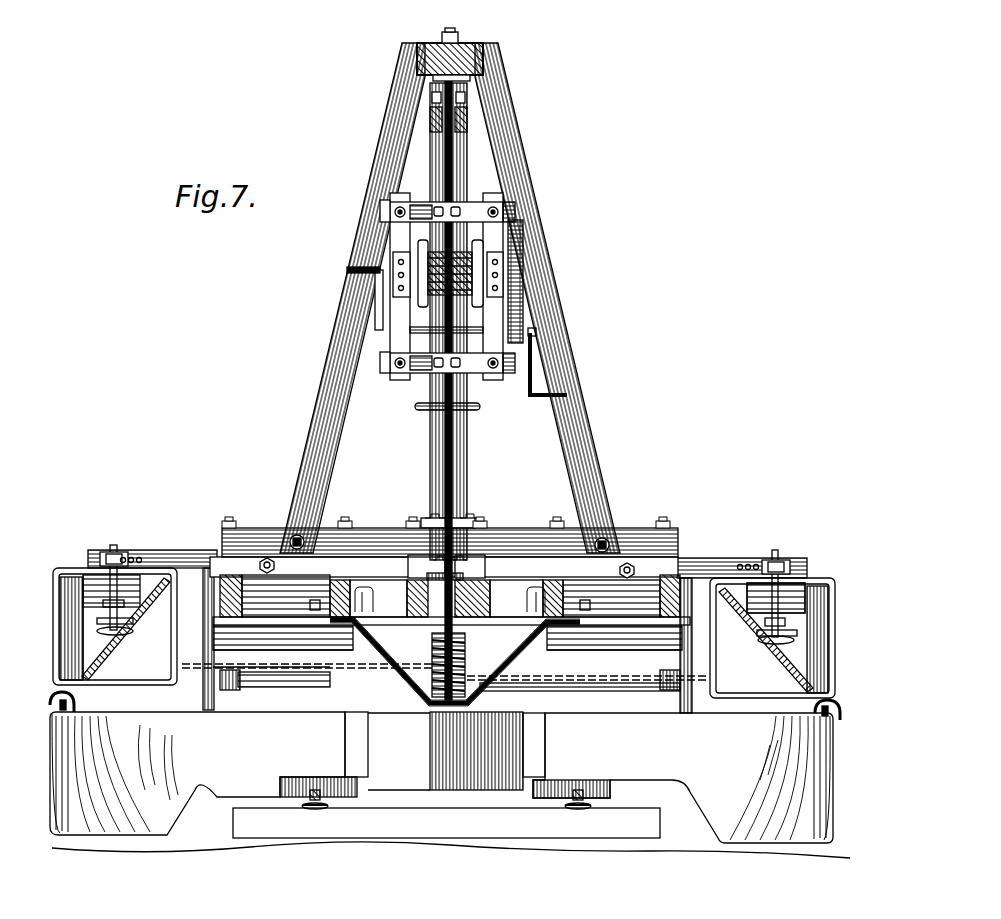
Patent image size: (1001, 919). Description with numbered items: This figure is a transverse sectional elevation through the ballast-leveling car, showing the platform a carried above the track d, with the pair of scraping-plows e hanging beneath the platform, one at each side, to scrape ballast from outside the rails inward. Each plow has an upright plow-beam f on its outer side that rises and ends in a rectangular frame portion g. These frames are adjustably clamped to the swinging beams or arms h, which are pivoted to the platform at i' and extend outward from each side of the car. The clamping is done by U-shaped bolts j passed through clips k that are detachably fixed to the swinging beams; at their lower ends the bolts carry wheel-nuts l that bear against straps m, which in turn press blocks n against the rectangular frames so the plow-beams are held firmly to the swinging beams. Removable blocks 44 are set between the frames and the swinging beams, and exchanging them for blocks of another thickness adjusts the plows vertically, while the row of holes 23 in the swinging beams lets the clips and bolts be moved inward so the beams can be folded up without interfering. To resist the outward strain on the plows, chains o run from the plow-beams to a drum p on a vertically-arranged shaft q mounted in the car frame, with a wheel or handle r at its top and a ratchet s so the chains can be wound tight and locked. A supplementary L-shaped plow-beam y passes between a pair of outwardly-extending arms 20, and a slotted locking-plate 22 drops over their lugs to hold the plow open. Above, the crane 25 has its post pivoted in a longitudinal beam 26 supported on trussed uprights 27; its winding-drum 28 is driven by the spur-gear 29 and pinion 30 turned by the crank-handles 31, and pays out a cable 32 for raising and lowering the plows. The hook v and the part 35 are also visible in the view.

The longitudinal beam 26 is at (472, 50).
The crane 25 is at (467, 117).
The cable 32 is at (452, 155).
The spur-gear 29 is at (522, 265).
The winding-drum 28 is at (522, 293).
The pinion 30 is at (522, 322).
The crank-handles 31 is at (383, 293).
The trussed uprights 27 is at (318, 393).
The wheel or handle r is at (480, 408).
The vertically-arranged shaft q is at (455, 482).
The ratchet s is at (466, 570).
The pivot i' is at (444, 522).
The rectangular frame portions g is at (70, 568).
The upright plow-beams f is at (58, 640).
The wheel-nuts l is at (124, 634).
The straps m is at (160, 583).
The blocks n is at (776, 598).
The U-shaped bolts j is at (113, 545).
The beams or arms h is at (181, 552).
The clips k is at (118, 553).
The blocks 44 is at (150, 553).
The holes 23 is at (766, 565).
The hook v is at (75, 700).
The supplementary L-shaped plow-beam y is at (207, 630).
The chains o is at (288, 690).
The slotted locking-plate 22 is at (200, 680).
The outwardly-extending arms 20 is at (266, 681).
The drum p is at (433, 700).
The scraping-plows e is at (450, 785).
The support 35 is at (445, 755).
The platform a is at (446, 823).
The track d is at (316, 807).